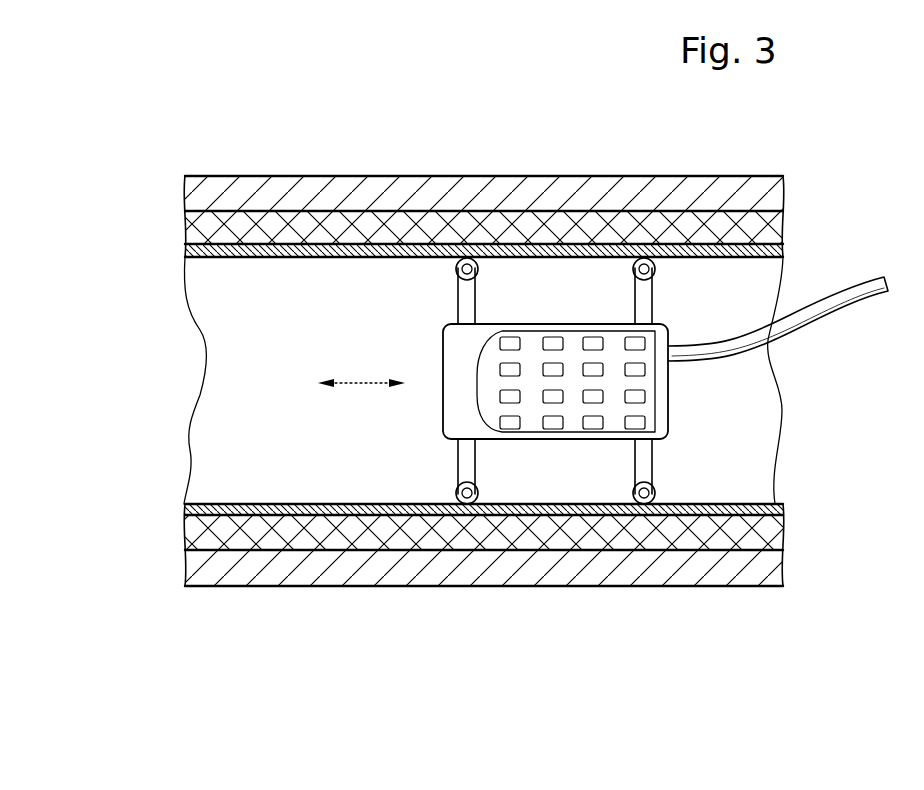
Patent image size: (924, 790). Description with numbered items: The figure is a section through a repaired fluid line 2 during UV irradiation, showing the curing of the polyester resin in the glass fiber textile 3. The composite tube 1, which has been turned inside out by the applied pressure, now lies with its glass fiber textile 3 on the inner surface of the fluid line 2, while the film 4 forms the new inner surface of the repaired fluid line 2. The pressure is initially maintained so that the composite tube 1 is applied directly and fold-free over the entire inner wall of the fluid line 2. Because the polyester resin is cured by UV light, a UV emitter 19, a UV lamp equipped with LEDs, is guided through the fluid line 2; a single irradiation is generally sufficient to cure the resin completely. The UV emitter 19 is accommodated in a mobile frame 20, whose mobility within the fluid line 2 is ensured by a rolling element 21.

The composite tube 1 is at (163, 390).
The fluid line 2 is at (432, 197).
The glass fiber textile 3 is at (185, 212).
The film 4 is at (182, 250).
The UV emitter 19 is at (665, 413).
The mobile frame 20 is at (643, 463).
The rolling element 21 is at (627, 500).